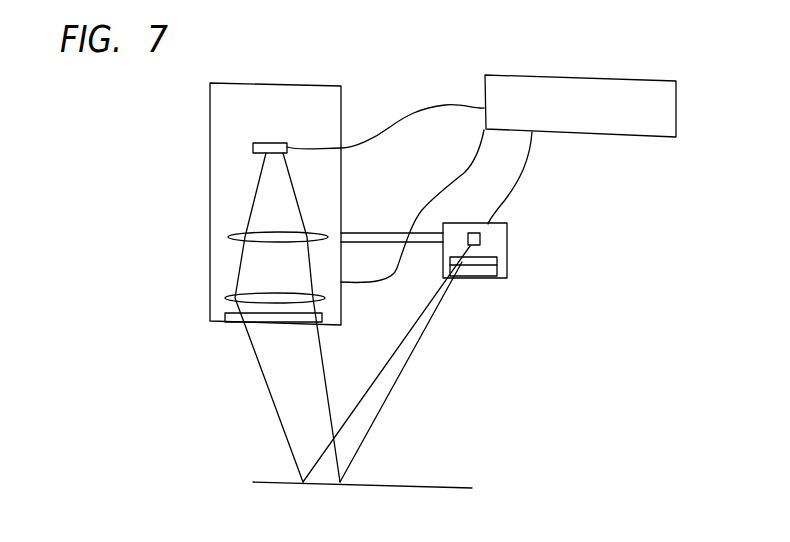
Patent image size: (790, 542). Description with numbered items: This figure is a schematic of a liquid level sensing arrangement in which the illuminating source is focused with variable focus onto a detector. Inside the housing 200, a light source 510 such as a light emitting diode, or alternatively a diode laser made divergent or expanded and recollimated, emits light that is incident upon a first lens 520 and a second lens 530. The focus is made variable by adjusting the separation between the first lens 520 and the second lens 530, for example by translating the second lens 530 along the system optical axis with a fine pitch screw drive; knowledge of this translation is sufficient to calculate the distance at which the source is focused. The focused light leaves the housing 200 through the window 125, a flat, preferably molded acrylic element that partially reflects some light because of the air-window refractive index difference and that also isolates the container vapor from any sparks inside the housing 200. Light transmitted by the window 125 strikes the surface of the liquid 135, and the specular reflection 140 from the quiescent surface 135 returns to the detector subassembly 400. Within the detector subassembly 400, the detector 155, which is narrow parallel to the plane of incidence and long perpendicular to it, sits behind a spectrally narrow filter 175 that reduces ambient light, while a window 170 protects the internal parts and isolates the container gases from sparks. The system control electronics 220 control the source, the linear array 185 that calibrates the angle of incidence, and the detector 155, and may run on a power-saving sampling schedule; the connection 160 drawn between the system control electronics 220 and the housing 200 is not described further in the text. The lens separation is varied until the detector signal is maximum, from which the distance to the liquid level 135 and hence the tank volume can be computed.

The housing 200 is at (293, 84).
The light source 510 is at (297, 123).
The first lens 520 is at (226, 228).
The second lens 530 is at (224, 298).
The window 125 is at (244, 326).
The surface of the liquid 135 is at (438, 483).
The specular reflection 140 is at (389, 381).
The linear array 185 is at (328, 290).
The control cable 160 is at (398, 207).
The detector subassembly 400 is at (507, 224).
The detector 155 is at (476, 232).
The filter 175 is at (498, 260).
The window 170 is at (498, 276).
The system control electronics 220 is at (592, 137).